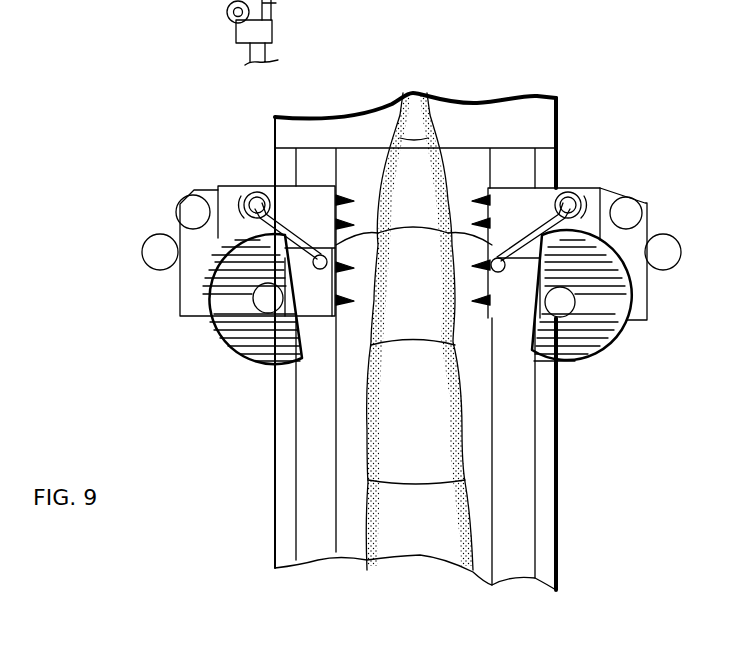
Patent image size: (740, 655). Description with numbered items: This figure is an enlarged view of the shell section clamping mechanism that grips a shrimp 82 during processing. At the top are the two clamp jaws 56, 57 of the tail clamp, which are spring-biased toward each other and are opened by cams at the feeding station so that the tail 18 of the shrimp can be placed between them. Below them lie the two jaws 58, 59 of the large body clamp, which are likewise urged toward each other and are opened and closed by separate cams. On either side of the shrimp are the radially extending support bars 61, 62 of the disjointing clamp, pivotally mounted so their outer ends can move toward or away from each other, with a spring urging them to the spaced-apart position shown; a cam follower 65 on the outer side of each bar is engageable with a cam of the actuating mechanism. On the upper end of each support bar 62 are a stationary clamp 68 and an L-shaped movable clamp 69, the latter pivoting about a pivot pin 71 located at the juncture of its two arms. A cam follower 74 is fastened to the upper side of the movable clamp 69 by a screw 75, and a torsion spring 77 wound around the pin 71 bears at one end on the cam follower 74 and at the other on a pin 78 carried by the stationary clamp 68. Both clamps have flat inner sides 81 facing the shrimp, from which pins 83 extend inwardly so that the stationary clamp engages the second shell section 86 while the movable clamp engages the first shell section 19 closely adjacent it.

The tail 18 is at (410, 95).
The first shell section 19 is at (420, 152).
The clamp jaw 56 is at (234, 50).
The clamp jaw 57 is at (546, 110).
The jaw 58 is at (308, 505).
The jaw 59 is at (520, 473).
The support bar 61 is at (200, 187).
The support bar 62 is at (612, 198).
The cam follower 65 is at (160, 234).
The stationary clamp 68 is at (292, 366).
The movable clamp 69 is at (316, 186).
The pivot pin 71 is at (262, 192).
The cam follower 74 is at (226, 345).
The screw 75 is at (256, 305).
The torsion spring 77 is at (306, 238).
The pin 78 is at (303, 313).
The flat inner side 81 is at (446, 240).
The shrimp 82 is at (412, 561).
The pins 83 is at (476, 198).
The second shell section 86 is at (429, 311).